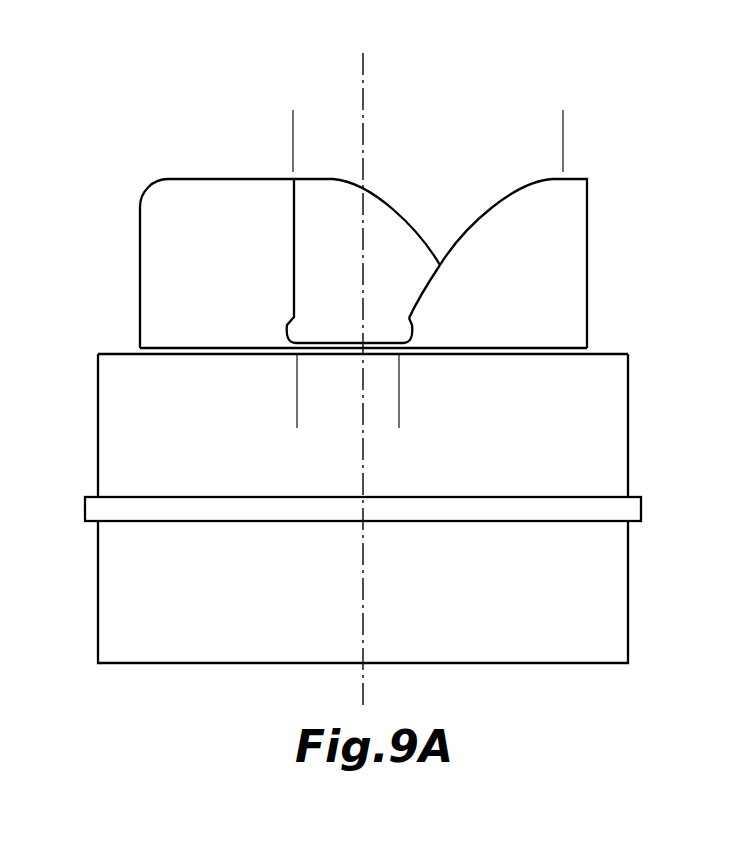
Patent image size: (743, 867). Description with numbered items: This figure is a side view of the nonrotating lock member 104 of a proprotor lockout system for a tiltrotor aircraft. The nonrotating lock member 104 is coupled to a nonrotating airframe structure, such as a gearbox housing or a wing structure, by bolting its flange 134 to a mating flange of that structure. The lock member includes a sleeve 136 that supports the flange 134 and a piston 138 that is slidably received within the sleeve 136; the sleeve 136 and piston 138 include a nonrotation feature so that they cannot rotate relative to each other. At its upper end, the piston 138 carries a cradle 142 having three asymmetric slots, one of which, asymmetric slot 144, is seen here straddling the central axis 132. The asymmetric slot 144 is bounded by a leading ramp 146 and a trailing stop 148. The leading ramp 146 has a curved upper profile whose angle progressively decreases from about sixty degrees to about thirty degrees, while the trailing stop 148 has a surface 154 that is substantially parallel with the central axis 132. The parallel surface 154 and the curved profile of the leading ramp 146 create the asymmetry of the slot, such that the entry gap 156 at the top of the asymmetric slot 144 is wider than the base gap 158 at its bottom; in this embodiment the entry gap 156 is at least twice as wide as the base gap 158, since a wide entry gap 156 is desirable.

The nonrotating lock member 104 is at (615, 434).
The central axis 132 is at (363, 72).
The flange 134 is at (632, 510).
The sleeve 136 is at (615, 615).
The piston 138 is at (575, 293).
The cradle 142 is at (147, 305).
The asymmetric slot 144 is at (493, 206).
The leading ramp 146 is at (470, 231).
The trailing stop 148 is at (293, 260).
The surface 154 is at (297, 212).
The entry gap 156 is at (563, 128).
The base gap 158 is at (399, 413).